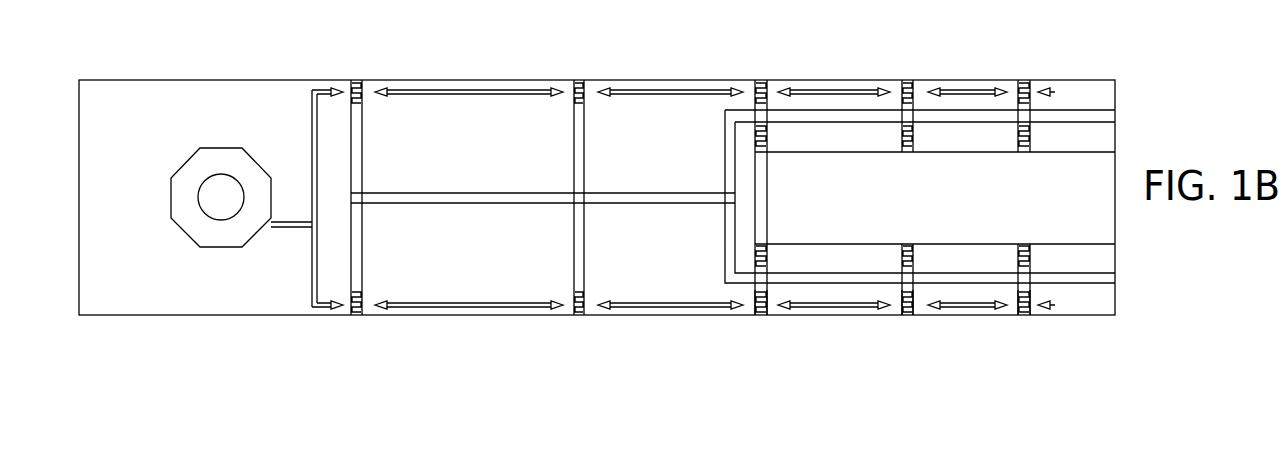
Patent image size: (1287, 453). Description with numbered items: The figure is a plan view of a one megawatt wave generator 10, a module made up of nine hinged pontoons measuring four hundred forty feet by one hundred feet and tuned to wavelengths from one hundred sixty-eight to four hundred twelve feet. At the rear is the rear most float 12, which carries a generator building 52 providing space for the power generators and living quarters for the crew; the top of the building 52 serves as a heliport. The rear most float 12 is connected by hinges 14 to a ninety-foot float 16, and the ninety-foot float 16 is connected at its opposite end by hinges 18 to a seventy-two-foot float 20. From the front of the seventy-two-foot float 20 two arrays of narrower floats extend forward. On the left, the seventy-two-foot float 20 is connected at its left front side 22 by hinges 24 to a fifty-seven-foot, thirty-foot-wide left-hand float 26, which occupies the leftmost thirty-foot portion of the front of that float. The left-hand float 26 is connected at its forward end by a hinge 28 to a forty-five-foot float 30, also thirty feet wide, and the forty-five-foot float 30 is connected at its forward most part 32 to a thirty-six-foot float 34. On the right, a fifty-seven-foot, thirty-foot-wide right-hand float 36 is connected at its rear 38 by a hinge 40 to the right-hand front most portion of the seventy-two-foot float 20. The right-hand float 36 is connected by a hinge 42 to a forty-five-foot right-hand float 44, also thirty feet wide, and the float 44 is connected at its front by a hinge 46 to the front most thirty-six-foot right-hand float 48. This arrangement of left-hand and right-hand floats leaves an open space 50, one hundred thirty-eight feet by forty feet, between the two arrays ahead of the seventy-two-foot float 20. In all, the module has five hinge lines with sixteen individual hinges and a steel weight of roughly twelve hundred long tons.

The wave generator 10 is at (186, 56).
The rear most float 12 is at (222, 90).
The hinges 14 is at (358, 82).
The ninety-foot float 16 is at (448, 108).
The hinges 18 is at (578, 82).
The seventy-two-foot float 20 is at (655, 112).
The left front side 22 is at (733, 103).
The hinges 24 is at (757, 80).
The left-hand float 26 is at (835, 103).
The hinge 28 is at (908, 80).
The forty-five-foot float 30 is at (945, 105).
The forward most part 32 is at (1025, 80).
The thirty-six-foot float 34 is at (1090, 100).
The right-hand float 36 is at (838, 293).
The rear 38 is at (775, 293).
The hinge 40 is at (758, 318).
The hinge 42 is at (905, 318).
The right-hand float 44 is at (968, 295).
The hinge 46 is at (1025, 318).
The right-hand float 48 is at (1085, 305).
The open space 50 is at (983, 208).
The generator building 52 is at (210, 237).